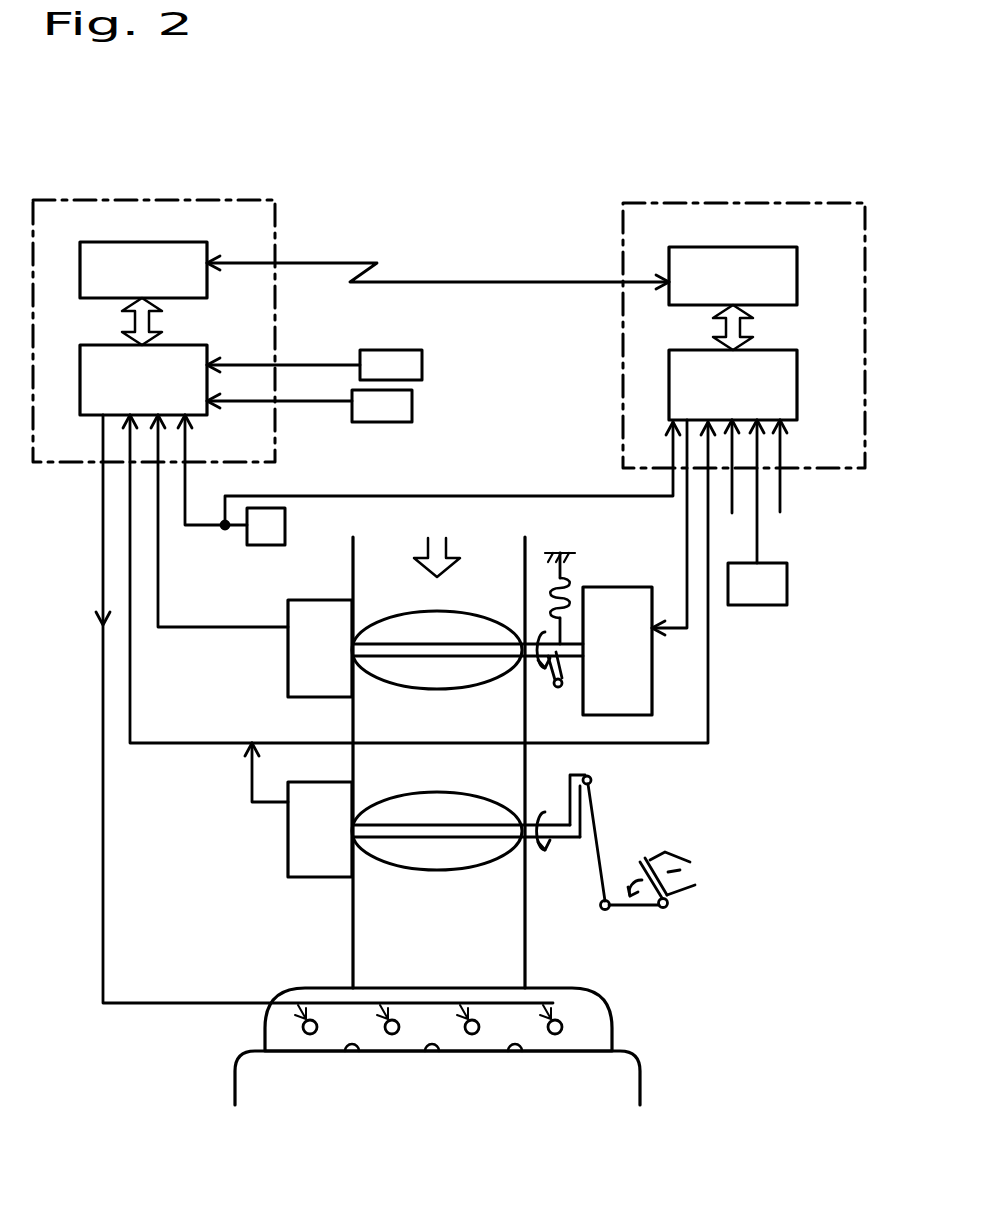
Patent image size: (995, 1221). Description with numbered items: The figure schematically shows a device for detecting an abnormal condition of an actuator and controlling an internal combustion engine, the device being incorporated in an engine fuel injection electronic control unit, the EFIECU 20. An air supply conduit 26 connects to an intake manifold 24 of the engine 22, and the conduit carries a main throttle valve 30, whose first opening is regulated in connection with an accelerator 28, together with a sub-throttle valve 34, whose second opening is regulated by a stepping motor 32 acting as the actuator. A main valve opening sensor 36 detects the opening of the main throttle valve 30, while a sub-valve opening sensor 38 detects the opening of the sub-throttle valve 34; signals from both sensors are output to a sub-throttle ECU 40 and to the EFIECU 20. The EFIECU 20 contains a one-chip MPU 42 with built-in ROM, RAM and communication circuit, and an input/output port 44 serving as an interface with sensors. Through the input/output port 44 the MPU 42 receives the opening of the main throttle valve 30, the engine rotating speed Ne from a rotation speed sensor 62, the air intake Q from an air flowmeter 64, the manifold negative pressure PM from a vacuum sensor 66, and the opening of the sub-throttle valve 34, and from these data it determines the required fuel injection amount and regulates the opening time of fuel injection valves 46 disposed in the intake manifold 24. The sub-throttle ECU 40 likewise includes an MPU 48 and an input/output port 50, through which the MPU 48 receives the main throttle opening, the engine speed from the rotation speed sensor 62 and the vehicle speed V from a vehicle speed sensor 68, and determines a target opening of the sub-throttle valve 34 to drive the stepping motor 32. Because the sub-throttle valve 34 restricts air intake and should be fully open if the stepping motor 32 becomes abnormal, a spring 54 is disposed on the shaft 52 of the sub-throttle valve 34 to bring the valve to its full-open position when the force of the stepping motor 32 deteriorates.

The engine fuel injection electronic control unit (EFIECU) 20 is at (154, 300).
The engine 22 is at (640, 1082).
The intake manifold 24 is at (612, 1015).
The air supply conduit 26 is at (525, 955).
The accelerator 28 is at (630, 870).
The main throttle valve 30 is at (410, 868).
The stepping motor 32 is at (652, 672).
The sub-throttle valve 34 is at (405, 612).
The main valve opening sensor 36 is at (288, 853).
The sub-valve opening sensor 38 is at (288, 670).
The sub-throttle electrical control unit (sub-throttle ECU) 40 is at (744, 304).
The microprocessor unit (MPU) 42 is at (180, 242).
The input/output port 44 is at (188, 345).
The fuel injection valves 46 is at (303, 1027).
The microprocessor unit (MPU) 48 is at (797, 276).
The input/output port 50 is at (797, 389).
The shaft 52 is at (568, 662).
The spring 54 is at (568, 580).
The rotation speed sensor 62 is at (285, 525).
The air flowmeter 64 is at (395, 422).
The vacuum sensor 66 is at (410, 350).
The vehicle speed sensor 68 is at (787, 582).